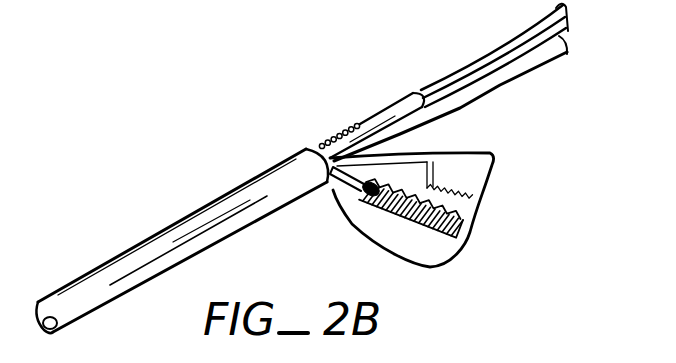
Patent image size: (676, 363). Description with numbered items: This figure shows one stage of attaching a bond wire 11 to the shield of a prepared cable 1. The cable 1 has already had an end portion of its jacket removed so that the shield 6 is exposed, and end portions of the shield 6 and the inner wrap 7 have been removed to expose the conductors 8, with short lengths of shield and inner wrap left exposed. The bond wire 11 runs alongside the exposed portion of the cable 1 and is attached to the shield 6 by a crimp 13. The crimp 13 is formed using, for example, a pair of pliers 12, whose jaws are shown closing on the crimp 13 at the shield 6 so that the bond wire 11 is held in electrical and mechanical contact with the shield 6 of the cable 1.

The cable 1 is at (138, 217).
The shield 6 is at (320, 147).
The inner wrap 7 is at (383, 115).
The conductors 8 is at (462, 66).
The bond wire 11 is at (481, 97).
The pair of pliers 12 is at (458, 182).
The crimp 13 is at (340, 182).